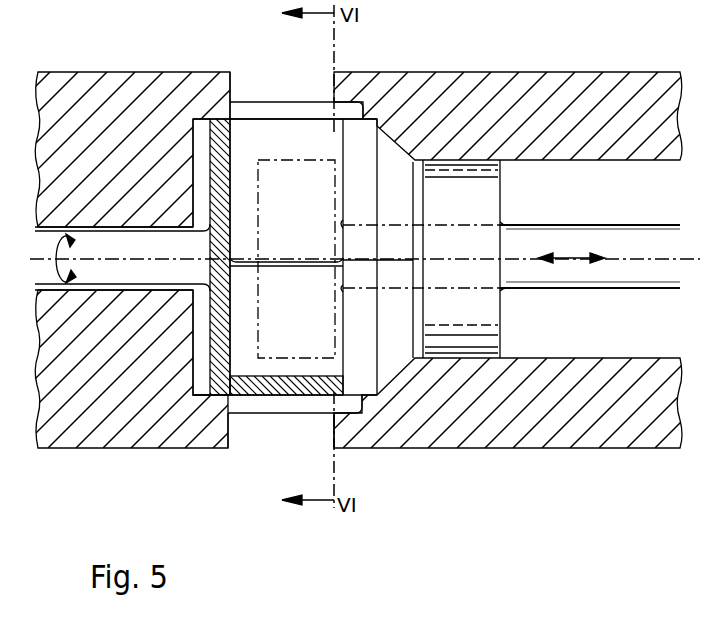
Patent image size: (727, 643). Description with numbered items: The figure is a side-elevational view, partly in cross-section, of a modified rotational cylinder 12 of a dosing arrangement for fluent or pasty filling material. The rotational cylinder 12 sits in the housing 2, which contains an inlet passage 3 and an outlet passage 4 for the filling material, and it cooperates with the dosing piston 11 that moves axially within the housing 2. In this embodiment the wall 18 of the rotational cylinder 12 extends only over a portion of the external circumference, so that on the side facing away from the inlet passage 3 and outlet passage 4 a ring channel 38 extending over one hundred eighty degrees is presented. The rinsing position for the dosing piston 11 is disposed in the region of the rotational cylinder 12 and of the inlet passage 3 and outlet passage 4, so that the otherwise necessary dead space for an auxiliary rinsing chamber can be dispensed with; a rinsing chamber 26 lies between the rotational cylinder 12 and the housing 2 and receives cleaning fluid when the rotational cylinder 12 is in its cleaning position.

The housing 2 is at (457, 433).
The inlet passage 3 is at (246, 86).
The outlet passage 4 is at (240, 437).
The dosing piston 11 is at (451, 172).
The rotational cylinder 12 is at (277, 397).
The wall 18 is at (314, 392).
The rinsing chamber 26 is at (201, 128).
The ring channel 38 is at (360, 104).